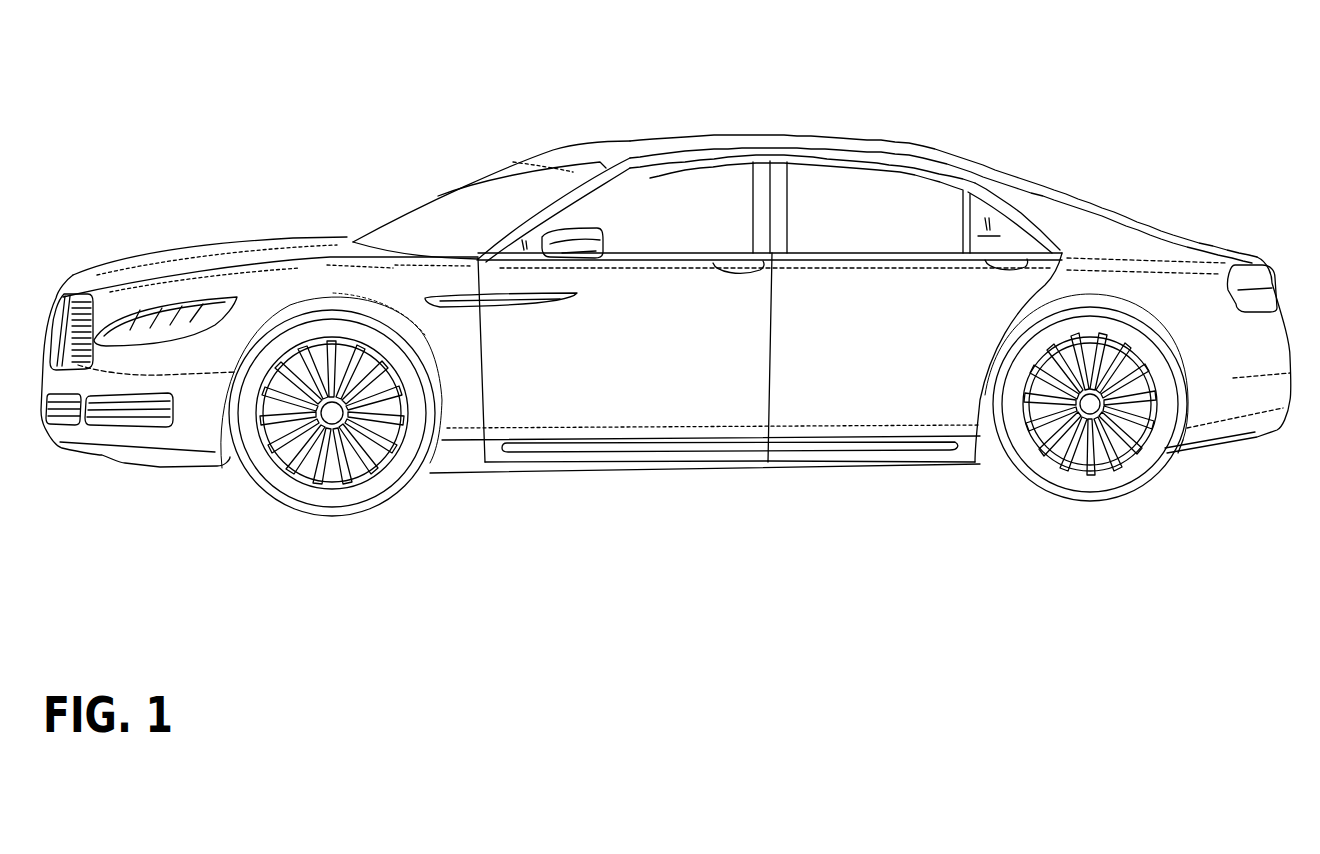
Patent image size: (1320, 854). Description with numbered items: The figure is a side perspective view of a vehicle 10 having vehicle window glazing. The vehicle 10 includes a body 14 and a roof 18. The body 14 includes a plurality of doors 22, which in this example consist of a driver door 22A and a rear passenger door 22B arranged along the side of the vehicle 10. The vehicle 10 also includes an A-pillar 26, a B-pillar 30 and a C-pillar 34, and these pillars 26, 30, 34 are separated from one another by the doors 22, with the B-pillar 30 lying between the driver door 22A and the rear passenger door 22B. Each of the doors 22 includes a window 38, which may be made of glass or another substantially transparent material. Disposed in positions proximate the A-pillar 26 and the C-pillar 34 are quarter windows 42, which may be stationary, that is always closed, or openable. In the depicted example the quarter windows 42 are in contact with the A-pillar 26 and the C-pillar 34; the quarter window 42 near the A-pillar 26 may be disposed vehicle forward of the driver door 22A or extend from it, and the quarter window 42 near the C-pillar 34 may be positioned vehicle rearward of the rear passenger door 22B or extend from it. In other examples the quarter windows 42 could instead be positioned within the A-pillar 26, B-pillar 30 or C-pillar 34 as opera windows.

The vehicle 10 is at (1202, 150).
The body 14 is at (1157, 280).
The roof 18 is at (777, 147).
The doors 22 is at (777, 478).
The driver door 22A is at (717, 382).
The rear passenger door 22B is at (866, 373).
The A-pillar 26 is at (540, 212).
The B-pillar 30 is at (778, 187).
The C-pillar 34 is at (1003, 187).
The window 38 is at (810, 217).
The quarter windows 42 is at (520, 243).